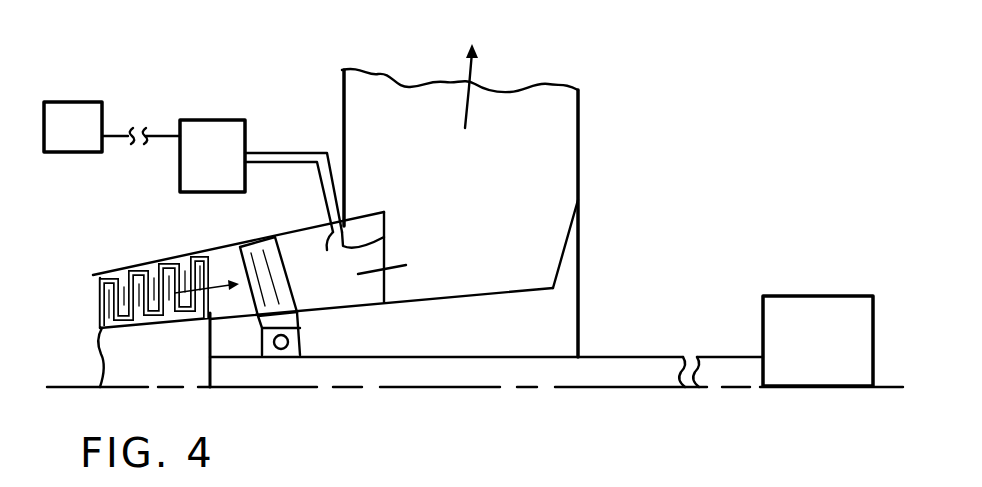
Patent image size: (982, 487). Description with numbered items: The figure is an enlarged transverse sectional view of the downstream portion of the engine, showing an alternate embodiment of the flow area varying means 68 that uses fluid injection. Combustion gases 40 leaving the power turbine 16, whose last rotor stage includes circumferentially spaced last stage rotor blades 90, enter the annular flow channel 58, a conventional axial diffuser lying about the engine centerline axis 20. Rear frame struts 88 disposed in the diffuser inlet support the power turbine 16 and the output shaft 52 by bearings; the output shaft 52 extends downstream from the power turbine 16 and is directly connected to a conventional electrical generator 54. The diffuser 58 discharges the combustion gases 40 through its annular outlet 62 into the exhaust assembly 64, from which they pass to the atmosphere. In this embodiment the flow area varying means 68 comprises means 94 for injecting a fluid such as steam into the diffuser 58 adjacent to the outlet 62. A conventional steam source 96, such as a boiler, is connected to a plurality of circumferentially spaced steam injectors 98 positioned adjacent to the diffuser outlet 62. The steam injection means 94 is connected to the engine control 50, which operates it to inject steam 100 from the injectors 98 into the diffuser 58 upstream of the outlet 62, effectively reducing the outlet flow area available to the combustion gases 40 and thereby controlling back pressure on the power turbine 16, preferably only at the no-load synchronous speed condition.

The power turbine 16 is at (129, 267).
The engine centerline axis 20 is at (412, 389).
The combustion gases 40 is at (420, 258).
The engine control 50 is at (92, 142).
The output shaft 52 is at (636, 356).
The electrical generator 54 is at (837, 363).
The annular flow channel 58 is at (294, 230).
The annular outlet 62 is at (386, 292).
The exhaust assembly 64 is at (582, 139).
The flow area varying means 68 is at (272, 134).
The rear frame struts 88 is at (255, 302).
The last stage rotor blades 90 is at (194, 258).
The means for injecting a fluid 94 is at (204, 120).
The steam source 96 is at (232, 173).
The steam injectors 98 is at (384, 234).
The steam 100 is at (321, 268).